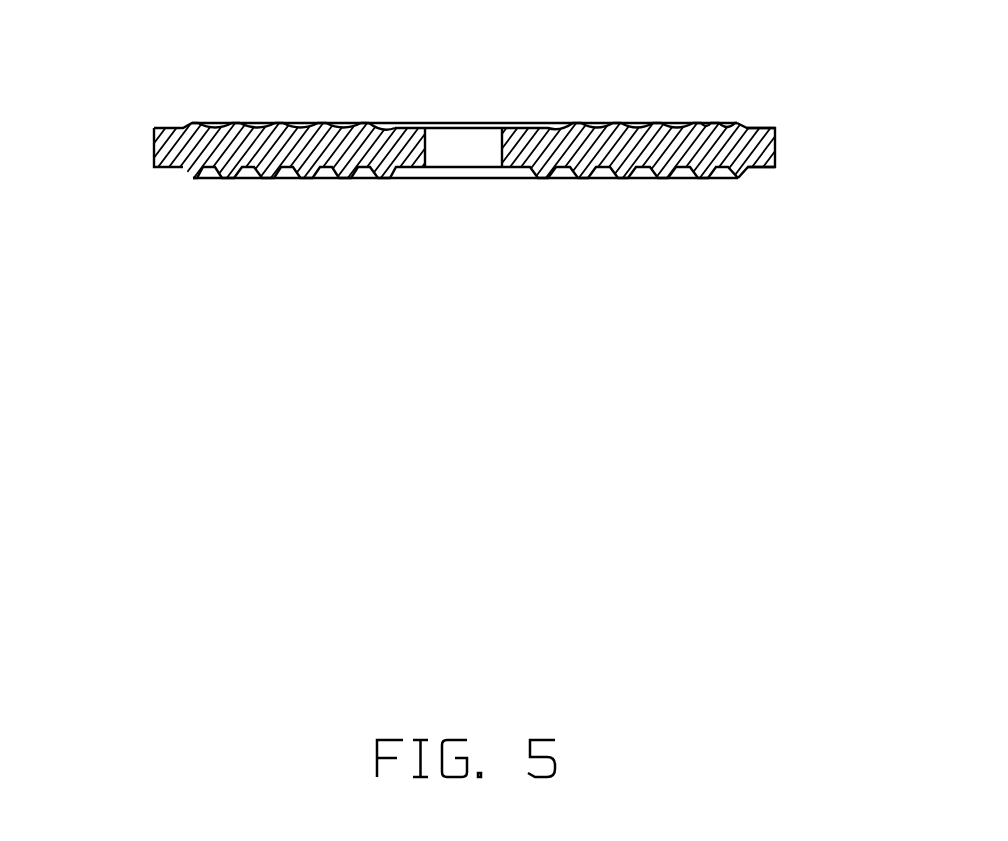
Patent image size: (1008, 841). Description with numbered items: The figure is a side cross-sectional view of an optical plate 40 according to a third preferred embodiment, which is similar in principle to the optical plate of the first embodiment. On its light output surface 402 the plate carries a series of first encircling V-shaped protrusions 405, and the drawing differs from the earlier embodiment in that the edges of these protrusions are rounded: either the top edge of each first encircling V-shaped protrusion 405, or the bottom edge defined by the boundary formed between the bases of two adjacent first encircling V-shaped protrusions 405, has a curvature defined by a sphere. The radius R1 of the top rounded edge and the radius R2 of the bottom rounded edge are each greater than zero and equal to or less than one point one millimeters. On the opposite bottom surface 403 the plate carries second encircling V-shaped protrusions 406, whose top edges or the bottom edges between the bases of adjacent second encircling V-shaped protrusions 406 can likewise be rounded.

The optical plate 40 is at (446, 128).
The radius of the bottom rounded edge R2 is at (254, 112).
The radius of the top rounded edge R1 is at (385, 112).
The first encircling V-shaped protrusion 405 is at (464, 94).
The second encircling V-shaped protrusion 406 is at (555, 183).
The light output surface 402 is at (761, 116).
The bottom surface 403 is at (759, 180).